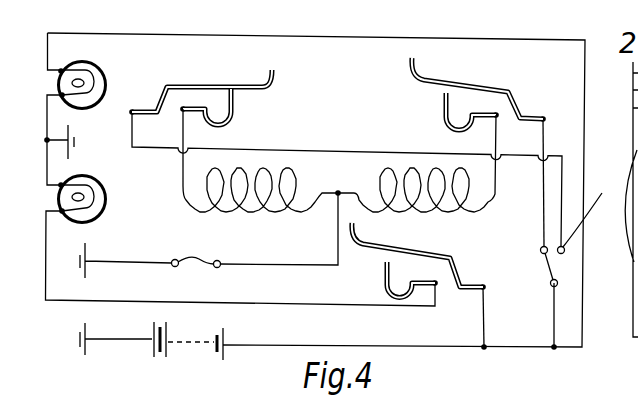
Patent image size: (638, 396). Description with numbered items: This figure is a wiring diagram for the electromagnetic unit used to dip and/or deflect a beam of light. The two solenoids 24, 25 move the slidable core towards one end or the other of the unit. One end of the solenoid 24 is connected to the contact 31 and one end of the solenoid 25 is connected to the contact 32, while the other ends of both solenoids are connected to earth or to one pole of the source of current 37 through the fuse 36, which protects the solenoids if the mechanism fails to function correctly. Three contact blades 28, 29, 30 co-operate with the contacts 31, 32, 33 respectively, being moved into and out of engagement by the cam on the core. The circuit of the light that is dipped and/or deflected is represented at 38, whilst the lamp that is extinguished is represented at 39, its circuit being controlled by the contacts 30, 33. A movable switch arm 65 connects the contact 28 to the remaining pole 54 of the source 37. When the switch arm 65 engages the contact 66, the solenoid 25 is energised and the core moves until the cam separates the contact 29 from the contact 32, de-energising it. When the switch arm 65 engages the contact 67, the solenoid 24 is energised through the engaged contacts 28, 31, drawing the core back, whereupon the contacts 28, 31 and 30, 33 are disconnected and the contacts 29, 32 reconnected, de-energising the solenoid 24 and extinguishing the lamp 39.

The circuit of the light that is dipped and/or deflected 38 is at (104, 74).
The lamp that is extinguished 39 is at (104, 188).
The contact blade 29 is at (248, 86).
The contact 32 is at (236, 120).
The contact blade 28 is at (477, 84).
The contact 31 is at (443, 112).
The solenoid 25 is at (253, 213).
The solenoid 24 is at (428, 214).
The contact blade 30 is at (392, 241).
The contact 33 is at (384, 280).
The fuse 36 is at (198, 259).
The source of current 37 is at (190, 344).
The remaining pole of the source 54 is at (226, 340).
The contact 67 is at (540, 247).
The movable switch arm 65 is at (547, 271).
The contact 66 is at (591, 211).